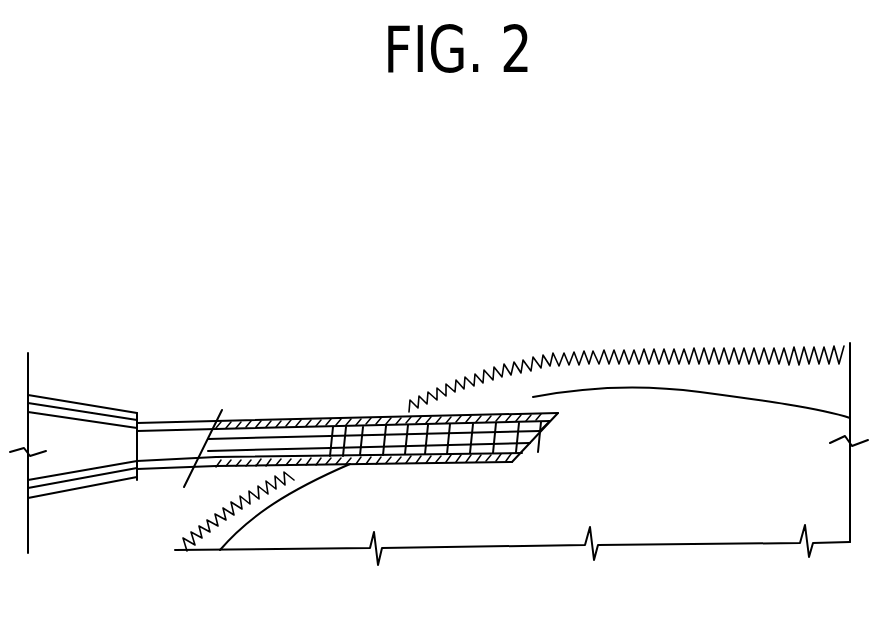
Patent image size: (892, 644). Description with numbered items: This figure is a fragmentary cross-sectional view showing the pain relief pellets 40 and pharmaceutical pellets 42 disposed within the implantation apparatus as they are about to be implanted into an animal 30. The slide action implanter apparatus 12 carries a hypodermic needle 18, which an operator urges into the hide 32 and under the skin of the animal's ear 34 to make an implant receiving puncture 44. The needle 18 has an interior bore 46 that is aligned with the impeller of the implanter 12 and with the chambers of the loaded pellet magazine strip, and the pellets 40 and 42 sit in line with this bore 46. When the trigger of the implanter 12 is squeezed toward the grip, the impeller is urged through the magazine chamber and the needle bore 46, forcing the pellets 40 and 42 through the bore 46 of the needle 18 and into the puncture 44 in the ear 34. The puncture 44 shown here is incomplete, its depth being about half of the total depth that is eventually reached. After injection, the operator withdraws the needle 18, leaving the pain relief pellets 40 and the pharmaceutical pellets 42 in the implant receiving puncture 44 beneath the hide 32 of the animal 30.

The slide action implanter apparatus 12 is at (97, 443).
The hypodermic needle 18 is at (167, 442).
The interior bore 46 is at (257, 445).
The pharmaceutical pellets 42 is at (384, 416).
The pain relief pellets 40 is at (411, 413).
The hide 32 is at (578, 350).
The ear 34 is at (670, 428).
The animal 30 is at (629, 336).
The implant receiving puncture 44 is at (512, 463).